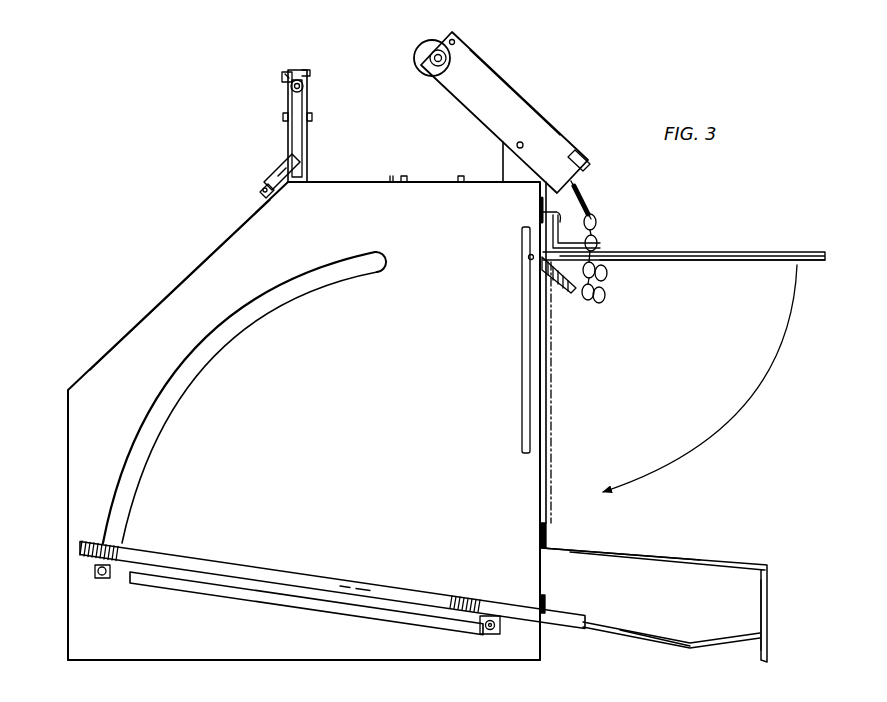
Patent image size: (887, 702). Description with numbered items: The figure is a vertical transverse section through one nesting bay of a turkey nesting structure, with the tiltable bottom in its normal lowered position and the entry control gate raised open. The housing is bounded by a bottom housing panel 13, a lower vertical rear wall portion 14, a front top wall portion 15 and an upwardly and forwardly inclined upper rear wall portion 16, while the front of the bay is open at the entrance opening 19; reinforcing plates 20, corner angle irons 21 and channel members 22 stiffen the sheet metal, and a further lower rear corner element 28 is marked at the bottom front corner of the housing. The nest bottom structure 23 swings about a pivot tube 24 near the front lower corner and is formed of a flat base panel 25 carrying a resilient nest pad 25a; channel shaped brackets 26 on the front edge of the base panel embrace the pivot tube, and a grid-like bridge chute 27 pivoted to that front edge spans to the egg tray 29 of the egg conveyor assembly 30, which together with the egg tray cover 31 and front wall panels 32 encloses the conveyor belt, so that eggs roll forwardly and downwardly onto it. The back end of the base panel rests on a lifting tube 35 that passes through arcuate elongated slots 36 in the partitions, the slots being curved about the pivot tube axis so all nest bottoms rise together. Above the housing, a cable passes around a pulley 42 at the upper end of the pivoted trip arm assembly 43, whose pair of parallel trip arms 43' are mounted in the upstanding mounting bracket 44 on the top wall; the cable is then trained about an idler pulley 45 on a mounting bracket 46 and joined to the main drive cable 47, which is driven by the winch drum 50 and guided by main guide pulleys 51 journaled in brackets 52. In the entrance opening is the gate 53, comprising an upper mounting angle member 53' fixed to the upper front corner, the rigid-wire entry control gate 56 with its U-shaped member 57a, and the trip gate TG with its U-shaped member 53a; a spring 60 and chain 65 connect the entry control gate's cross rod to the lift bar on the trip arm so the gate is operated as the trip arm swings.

The bottom housing panel 13 is at (296, 660).
The lower vertical rear wall portion 14 is at (68, 596).
The front top wall portion 15 is at (345, 182).
The upwardly and forwardly inclined upper rear wall portion 16 is at (205, 255).
The front opening 19 is at (552, 458).
The reinforcing plates 20 is at (255, 212).
The corner angle irons 21 is at (68, 655).
The channel members 22 is at (441, 183).
The nest bottom structure 23 is at (282, 560).
The pivot tube 24 is at (478, 630).
The base panel 25 is at (268, 603).
The nest pad 25a is at (392, 586).
The channel shaped brackets 26 is at (492, 634).
The bridge chute 27 is at (547, 605).
The lower rear corner 28 is at (545, 658).
The egg tray 29 is at (665, 640).
The egg conveyor assembly 30 is at (680, 578).
The egg tray cover 31 is at (634, 550).
The front wall panels 32 is at (766, 600).
The lifting tube 35 is at (110, 578).
The arcuate elongated slots 36 is at (208, 378).
The pulley 42 is at (420, 62).
The trip arm assembly 43 is at (505, 112).
The trip arms 43' is at (515, 92).
The mounting bracket 44 is at (503, 163).
The idler pulley 45 is at (284, 160).
The mounting bracket 46 is at (260, 186).
The main drive cable 47 is at (288, 74).
The winch drum 50 is at (302, 70).
The main guide pulleys 51 is at (290, 100).
The brackets 52 is at (308, 112).
The gate 53 is at (608, 227).
The upper mounting angle member 53' is at (521, 209).
The U-shaped member 53a is at (527, 400).
The entry control gate 56 is at (768, 252).
The U-shaped member 57a is at (740, 262).
The spring 60 is at (590, 200).
The chain 65 is at (604, 292).
The trip gate TG is at (522, 440).